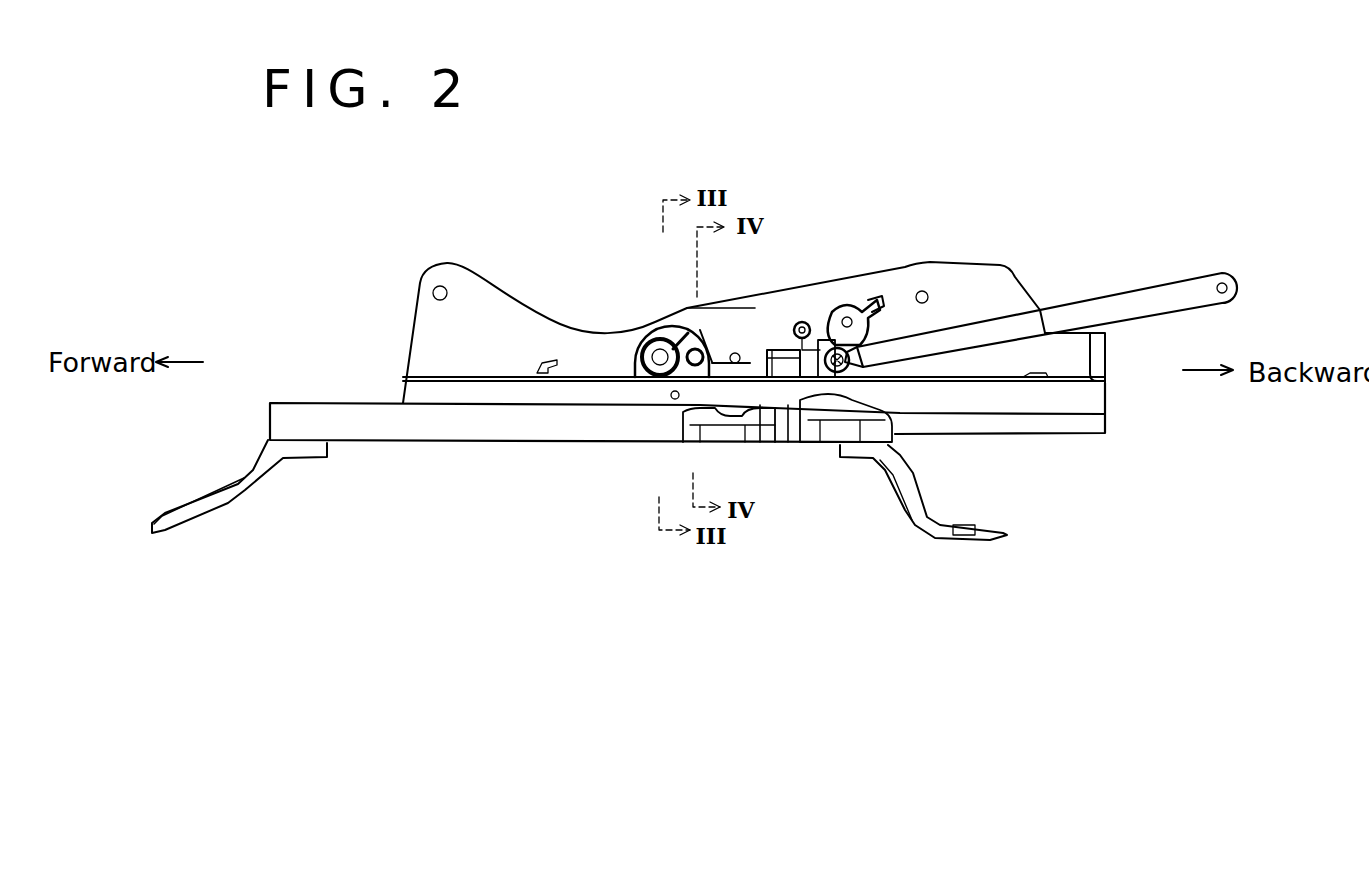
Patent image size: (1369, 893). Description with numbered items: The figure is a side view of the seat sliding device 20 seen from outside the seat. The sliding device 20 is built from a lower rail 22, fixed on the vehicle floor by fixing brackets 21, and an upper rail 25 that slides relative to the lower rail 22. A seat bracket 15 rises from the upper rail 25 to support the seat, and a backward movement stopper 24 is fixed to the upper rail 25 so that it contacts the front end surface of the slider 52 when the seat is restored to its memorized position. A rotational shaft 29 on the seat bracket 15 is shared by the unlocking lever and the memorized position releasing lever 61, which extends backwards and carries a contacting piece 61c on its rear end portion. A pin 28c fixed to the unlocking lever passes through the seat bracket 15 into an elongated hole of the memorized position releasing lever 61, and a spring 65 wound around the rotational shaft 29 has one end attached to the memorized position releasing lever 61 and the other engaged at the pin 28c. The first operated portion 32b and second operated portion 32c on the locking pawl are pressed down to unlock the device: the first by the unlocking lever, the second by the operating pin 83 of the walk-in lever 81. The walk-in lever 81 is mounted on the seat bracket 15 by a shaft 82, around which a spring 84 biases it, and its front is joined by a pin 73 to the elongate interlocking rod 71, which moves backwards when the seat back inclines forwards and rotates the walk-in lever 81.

The seat bracket 15 is at (508, 320).
The sliding device 20 is at (628, 445).
The fixing bracket 21 is at (242, 480).
The lower rail 22 is at (340, 440).
The backward movement stopper 24 is at (720, 445).
The upper rail 25 is at (1040, 427).
The pin 28c is at (712, 362).
The rotational shaft 29 is at (655, 343).
The first operated portion 32b is at (760, 353).
The second operated portion 32c is at (825, 315).
The slider 52 is at (747, 445).
The memorized position releasing lever 61 is at (720, 362).
The contacting piece 61c is at (760, 445).
The spring 65 is at (683, 340).
The interlocking rod 71 is at (1123, 302).
The pin 73 is at (870, 355).
The walk-in lever 81 is at (803, 320).
The shaft 82 is at (878, 327).
The operating pin 83 is at (792, 313).
The spring 84 is at (850, 350).